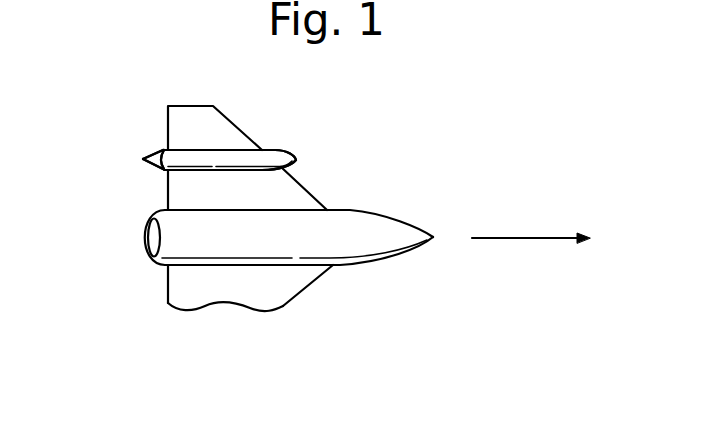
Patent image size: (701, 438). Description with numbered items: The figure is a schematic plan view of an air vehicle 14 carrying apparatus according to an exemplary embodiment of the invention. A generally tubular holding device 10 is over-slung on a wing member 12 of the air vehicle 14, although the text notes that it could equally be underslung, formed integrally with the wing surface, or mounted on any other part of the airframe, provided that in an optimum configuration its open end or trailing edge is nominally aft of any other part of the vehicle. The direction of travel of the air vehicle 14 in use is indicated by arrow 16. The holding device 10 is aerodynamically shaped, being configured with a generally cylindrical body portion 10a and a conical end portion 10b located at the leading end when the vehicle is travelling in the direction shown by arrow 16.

The holding device 10 is at (188, 183).
The cylindrical body portion 10a is at (197, 155).
The conical end portion 10b is at (277, 151).
The wing member 12 is at (282, 190).
The air vehicle 14 is at (365, 242).
The arrow 16 is at (548, 239).